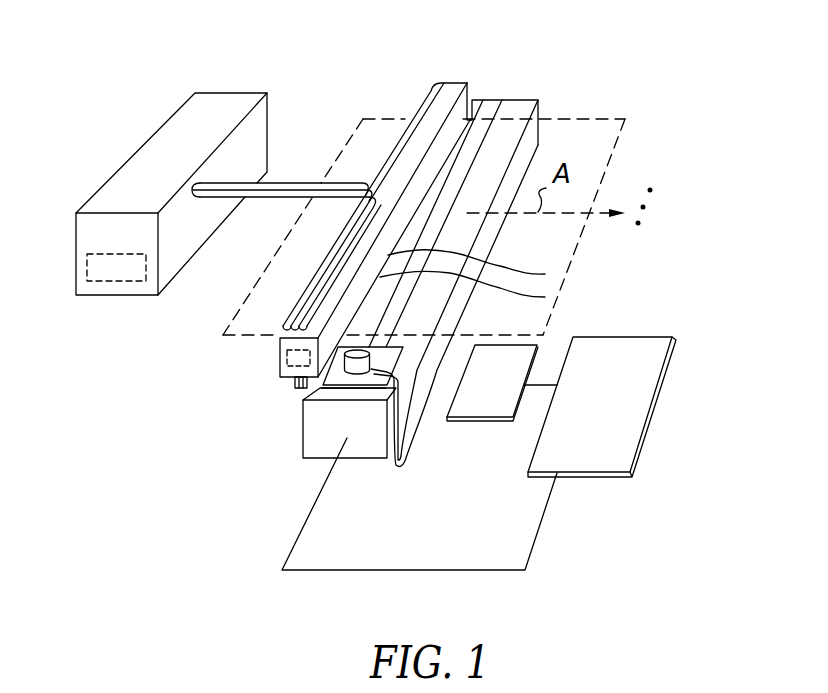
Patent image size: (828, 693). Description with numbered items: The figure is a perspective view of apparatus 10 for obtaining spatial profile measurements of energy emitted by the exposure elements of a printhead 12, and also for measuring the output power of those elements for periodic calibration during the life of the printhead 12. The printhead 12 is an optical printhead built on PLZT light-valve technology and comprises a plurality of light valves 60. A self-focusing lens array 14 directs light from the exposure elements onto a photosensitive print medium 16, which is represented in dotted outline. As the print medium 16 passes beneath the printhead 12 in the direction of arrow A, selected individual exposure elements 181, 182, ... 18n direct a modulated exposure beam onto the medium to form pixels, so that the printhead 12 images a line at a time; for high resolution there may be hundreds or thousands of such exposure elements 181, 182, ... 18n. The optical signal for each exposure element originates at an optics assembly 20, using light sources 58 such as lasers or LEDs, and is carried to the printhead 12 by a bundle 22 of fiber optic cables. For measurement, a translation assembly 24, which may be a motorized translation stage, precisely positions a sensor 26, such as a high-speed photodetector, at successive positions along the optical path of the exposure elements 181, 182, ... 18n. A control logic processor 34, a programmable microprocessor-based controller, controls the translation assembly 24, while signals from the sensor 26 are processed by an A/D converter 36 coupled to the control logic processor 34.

The apparatus 10 is at (126, 450).
The printhead 12 is at (446, 83).
The self-focusing lens array 14 is at (322, 380).
The photosensitive print medium 16 is at (626, 121).
The exposure element 181 is at (545, 274).
The exposure element 182 is at (545, 297).
The exposure element 18n is at (657, 189).
The optics assembly 20 is at (142, 192).
The bundle of fiber optic cables 22 is at (291, 183).
The translation assembly 24 is at (517, 100).
The sensor 26 is at (303, 410).
The control logic processor 34 is at (663, 372).
The A/D converter 36 is at (483, 418).
The light source 58 is at (103, 280).
The light valve 60 is at (281, 356).